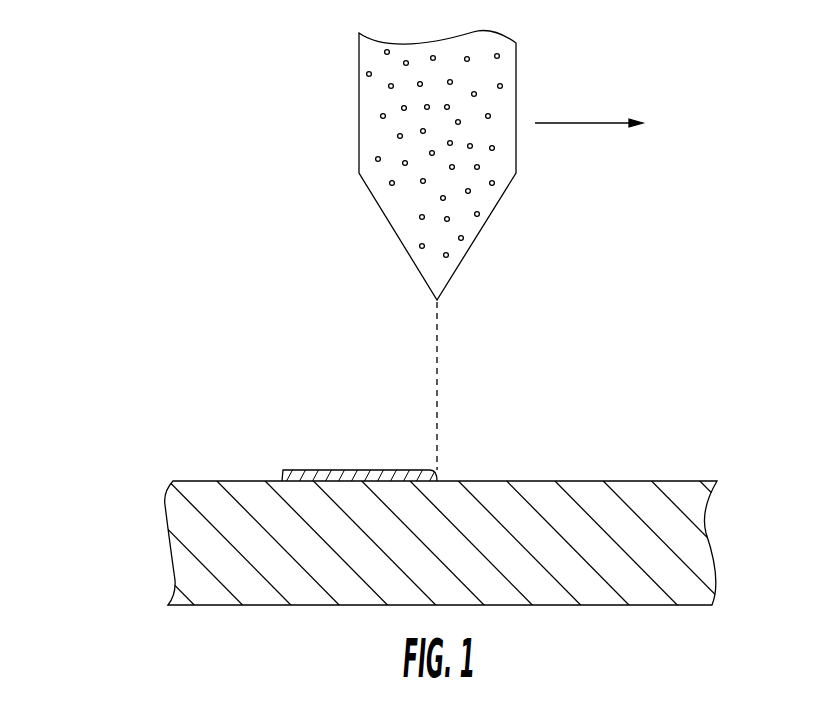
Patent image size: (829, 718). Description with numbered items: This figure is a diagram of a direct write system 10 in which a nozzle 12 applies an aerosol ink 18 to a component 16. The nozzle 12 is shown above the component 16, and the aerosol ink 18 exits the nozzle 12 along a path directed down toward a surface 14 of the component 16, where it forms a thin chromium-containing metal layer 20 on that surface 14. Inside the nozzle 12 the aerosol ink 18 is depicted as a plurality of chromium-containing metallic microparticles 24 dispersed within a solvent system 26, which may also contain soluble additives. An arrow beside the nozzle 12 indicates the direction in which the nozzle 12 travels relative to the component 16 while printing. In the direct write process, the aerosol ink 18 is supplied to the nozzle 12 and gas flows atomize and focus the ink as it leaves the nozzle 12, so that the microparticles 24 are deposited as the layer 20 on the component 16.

The direct write system 10 is at (138, 78).
The nozzle 12 is at (516, 60).
The substrate 14 is at (662, 481).
The component 16 is at (337, 572).
The aerosol ink 18 is at (445, 355).
The deposited layer 20 is at (348, 470).
The chromium-containing metallic microparticles 24 is at (387, 85).
The solvent system 26 is at (482, 133).